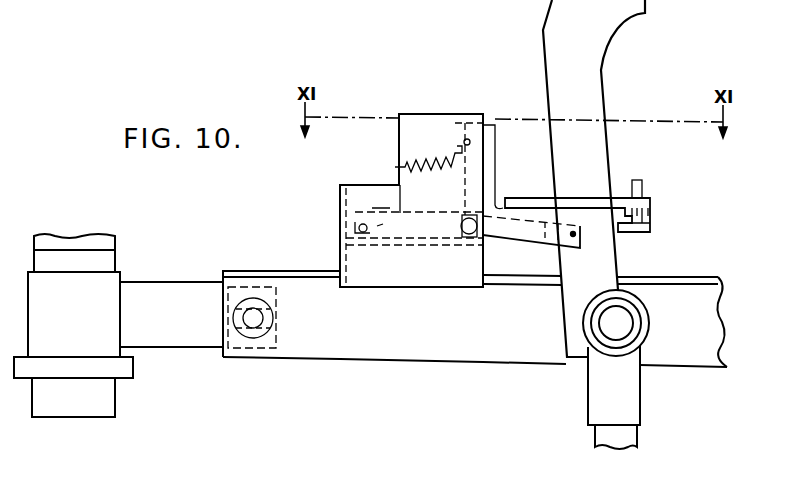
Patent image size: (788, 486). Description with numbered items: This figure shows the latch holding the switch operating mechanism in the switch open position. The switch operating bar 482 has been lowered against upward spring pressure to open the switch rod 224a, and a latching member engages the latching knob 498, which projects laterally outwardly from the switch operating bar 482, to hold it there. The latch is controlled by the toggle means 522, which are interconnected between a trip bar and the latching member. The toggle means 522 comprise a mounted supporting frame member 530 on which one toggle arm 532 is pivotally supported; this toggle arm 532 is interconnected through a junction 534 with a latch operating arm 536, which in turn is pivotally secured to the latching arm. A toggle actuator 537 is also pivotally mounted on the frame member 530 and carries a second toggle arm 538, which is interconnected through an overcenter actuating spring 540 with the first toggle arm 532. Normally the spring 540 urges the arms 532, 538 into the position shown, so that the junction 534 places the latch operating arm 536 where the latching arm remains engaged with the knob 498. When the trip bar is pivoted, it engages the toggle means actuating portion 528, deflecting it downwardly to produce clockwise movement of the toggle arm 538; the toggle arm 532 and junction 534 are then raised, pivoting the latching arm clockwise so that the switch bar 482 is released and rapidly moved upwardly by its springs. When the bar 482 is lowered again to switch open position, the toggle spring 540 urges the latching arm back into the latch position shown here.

The switch rod 224a is at (115, 252).
The toggle means 522 is at (395, 213).
The supporting frame member 530 is at (365, 280).
The toggle arm 532 is at (356, 236).
The junction 534 is at (468, 239).
The latch operating arm 536 is at (533, 242).
The toggle actuator 537 is at (540, 197).
The toggle arm 538 is at (496, 165).
The overcenter actuating spring 540 is at (408, 163).
The toggle means actuating portion 528 is at (642, 184).
The latching knob 498 is at (632, 300).
The switch operating bar 482 is at (705, 297).